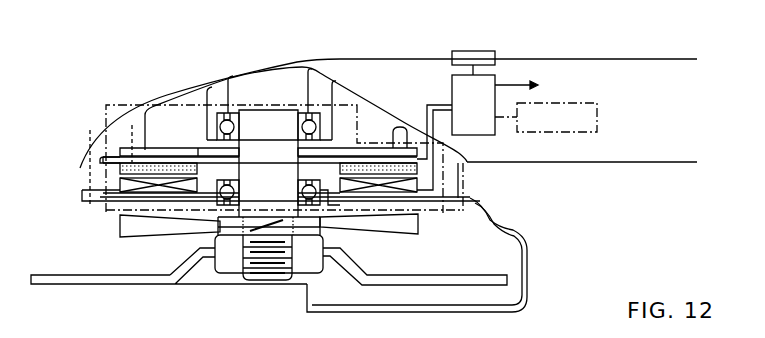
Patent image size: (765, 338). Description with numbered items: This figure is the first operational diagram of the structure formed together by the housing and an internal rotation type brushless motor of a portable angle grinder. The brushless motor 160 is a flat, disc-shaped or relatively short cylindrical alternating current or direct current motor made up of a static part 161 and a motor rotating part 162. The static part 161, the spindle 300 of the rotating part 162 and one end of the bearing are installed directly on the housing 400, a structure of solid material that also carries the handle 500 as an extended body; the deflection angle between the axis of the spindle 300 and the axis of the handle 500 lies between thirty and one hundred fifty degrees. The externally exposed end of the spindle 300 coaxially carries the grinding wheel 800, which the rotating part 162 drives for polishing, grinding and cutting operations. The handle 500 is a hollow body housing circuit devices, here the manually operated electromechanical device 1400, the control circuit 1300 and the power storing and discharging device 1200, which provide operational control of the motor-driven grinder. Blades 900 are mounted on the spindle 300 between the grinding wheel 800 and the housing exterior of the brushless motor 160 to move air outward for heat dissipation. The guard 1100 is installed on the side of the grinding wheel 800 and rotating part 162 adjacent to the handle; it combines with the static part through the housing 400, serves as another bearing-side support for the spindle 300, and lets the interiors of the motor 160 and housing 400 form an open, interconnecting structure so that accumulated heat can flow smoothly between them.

The brushless motor 160 is at (117, 100).
The motor rotating part 162 is at (100, 166).
The static part 161 is at (123, 183).
The housing 400 is at (222, 68).
The control circuit 1300 is at (451, 88).
The manually operated electromechanical device 1400 is at (472, 50).
The handle 500 is at (595, 55).
The power storing and discharging device 1200 is at (597, 113).
The guard 1100 is at (530, 275).
The blade 900 is at (400, 230).
The grinding wheel 800 is at (60, 285).
The spindle 300 is at (257, 217).